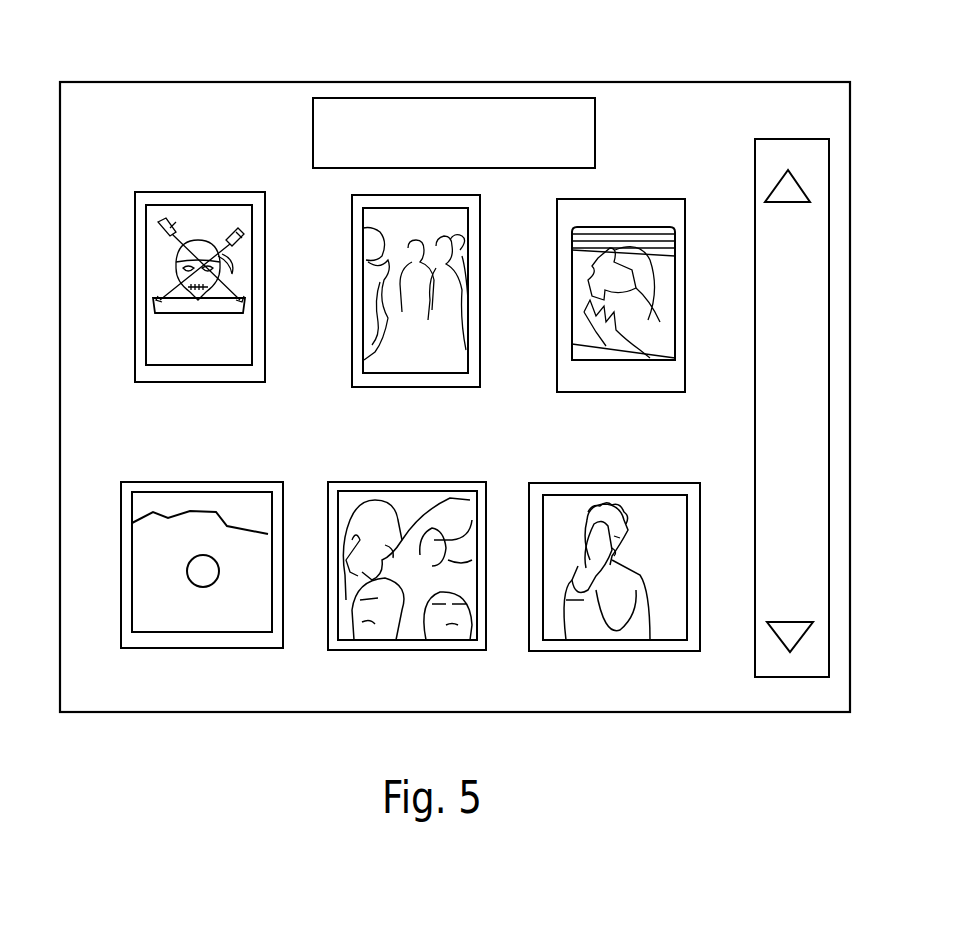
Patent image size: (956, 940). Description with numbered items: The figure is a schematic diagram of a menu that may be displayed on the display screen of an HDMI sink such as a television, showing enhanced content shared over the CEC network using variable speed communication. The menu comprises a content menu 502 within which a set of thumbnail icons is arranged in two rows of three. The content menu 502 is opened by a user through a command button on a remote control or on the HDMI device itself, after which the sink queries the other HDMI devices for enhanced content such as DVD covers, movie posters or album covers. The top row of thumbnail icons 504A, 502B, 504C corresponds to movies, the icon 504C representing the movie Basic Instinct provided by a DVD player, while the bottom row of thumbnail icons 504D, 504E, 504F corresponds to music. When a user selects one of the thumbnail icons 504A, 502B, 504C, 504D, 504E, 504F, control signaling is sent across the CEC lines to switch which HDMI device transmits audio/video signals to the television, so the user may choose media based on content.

The content menu 502 is at (148, 82).
The thumbnail icon 504A is at (213, 384).
The thumbnail icon 502B is at (432, 388).
The thumbnail icon 504C is at (653, 386).
The thumbnail icon 504D is at (213, 482).
The thumbnail icon 504E is at (436, 482).
The thumbnail icon 504F is at (653, 483).